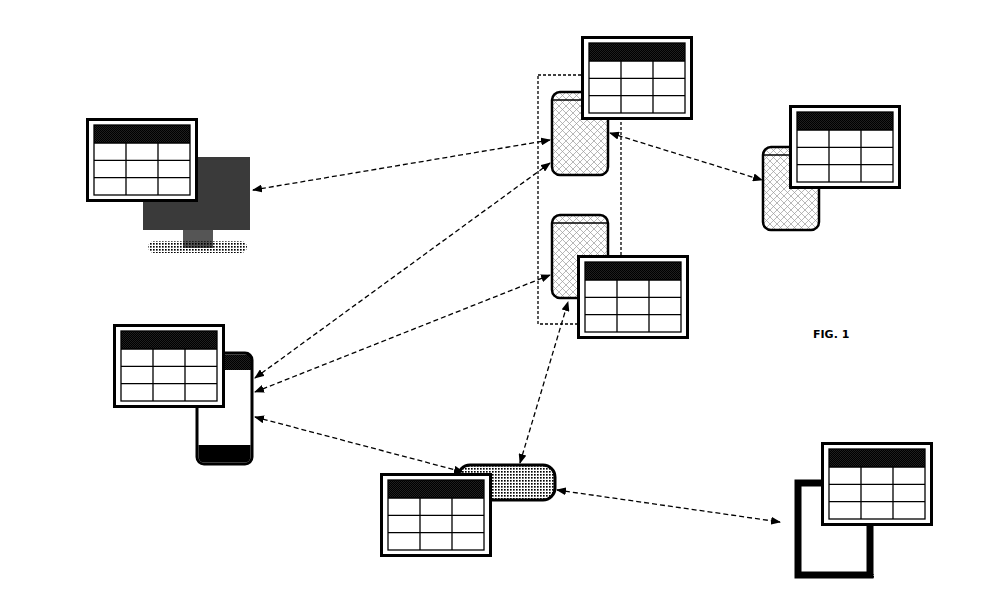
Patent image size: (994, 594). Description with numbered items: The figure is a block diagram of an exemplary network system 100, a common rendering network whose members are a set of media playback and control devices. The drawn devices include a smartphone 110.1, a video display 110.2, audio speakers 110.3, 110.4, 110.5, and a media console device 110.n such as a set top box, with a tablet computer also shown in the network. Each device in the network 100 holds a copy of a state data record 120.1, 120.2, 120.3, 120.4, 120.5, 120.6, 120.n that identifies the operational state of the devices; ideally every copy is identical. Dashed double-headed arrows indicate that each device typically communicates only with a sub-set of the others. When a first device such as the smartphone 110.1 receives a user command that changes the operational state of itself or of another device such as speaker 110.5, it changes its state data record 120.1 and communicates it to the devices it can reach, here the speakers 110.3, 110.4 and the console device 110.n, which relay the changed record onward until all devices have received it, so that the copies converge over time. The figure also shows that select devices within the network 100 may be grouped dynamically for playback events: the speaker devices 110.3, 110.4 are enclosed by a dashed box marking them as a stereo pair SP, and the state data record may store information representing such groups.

The network system 100 is at (559, 327).
The stereo pair SP is at (621, 188).
The smartphone 110.1 is at (197, 448).
The video display 110.2 is at (143, 221).
The audio speaker 110.3 is at (552, 104).
The audio speaker 110.4 is at (552, 228).
The audio speaker 110.5 is at (763, 213).
The media console device 110.n is at (531, 503).
The data record 120.1 is at (113, 337).
The data record 120.2 is at (86, 140).
The data record 120.3 is at (581, 50).
The data record 120.4 is at (688, 323).
The data record 120.5 is at (789, 118).
The data record 120.6 is at (821, 455).
The data record 120.n is at (380, 503).